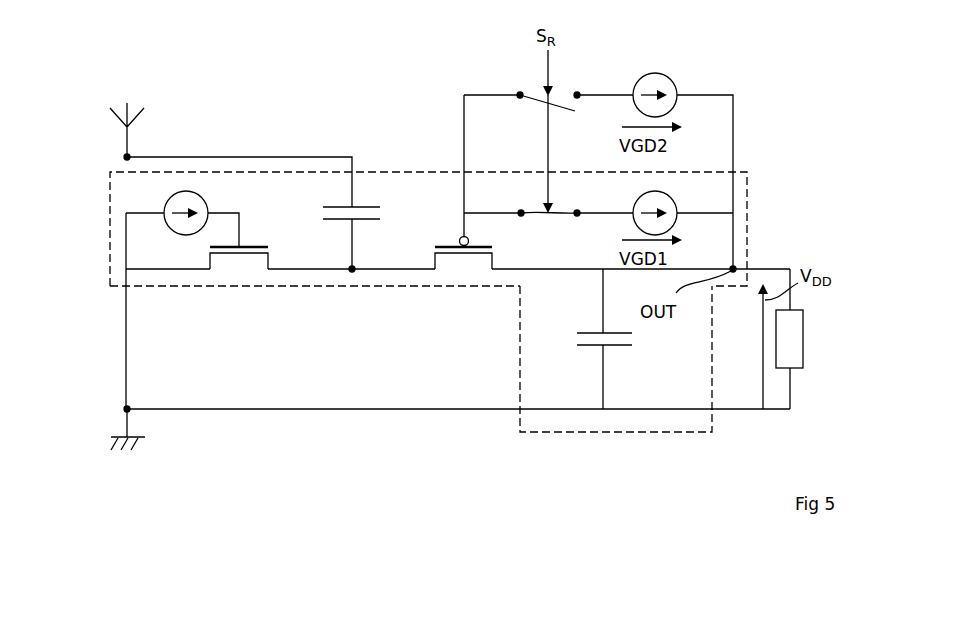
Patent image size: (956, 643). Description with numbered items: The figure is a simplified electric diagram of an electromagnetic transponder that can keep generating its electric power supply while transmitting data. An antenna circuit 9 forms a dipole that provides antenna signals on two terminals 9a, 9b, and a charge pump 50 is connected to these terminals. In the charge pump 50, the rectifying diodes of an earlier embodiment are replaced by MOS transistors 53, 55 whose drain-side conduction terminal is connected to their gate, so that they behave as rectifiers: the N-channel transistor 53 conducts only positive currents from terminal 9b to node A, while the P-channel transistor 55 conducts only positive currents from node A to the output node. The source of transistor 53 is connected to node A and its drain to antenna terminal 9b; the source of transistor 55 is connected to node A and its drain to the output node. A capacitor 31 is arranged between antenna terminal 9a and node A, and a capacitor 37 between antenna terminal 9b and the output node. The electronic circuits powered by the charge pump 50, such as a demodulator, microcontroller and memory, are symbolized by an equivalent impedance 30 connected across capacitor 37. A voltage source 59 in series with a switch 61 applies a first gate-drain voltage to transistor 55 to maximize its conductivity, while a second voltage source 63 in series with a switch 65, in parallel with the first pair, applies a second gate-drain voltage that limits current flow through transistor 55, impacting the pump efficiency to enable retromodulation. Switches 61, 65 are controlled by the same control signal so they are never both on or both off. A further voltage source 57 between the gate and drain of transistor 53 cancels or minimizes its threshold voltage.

The antenna circuit 9 is at (127, 86).
The antenna terminal 9a is at (124, 157).
The antenna terminal 9b is at (124, 409).
The equivalent impedance 30 is at (804, 341).
The capacitor 31 is at (366, 207).
The capacitor 37 is at (633, 349).
The charge pump 50 is at (600, 436).
The transistor 53 is at (226, 256).
The transistor 55 is at (460, 253).
The voltage source 57 is at (206, 198).
The voltage source 59 is at (668, 195).
The switch 61 is at (538, 215).
The voltage source 63 is at (657, 73).
The switch 65 is at (538, 102).
The node A is at (352, 273).